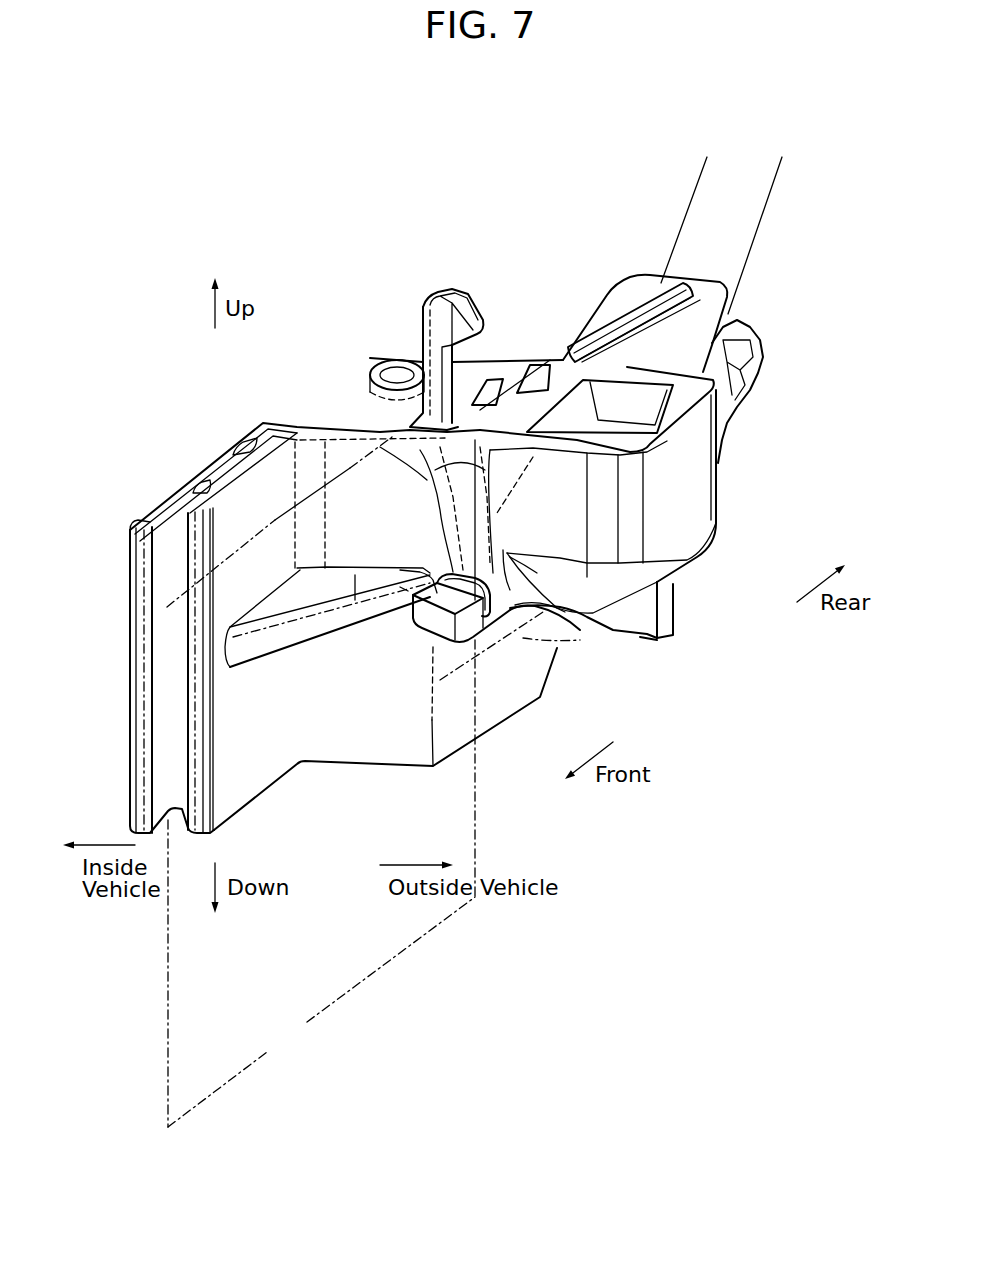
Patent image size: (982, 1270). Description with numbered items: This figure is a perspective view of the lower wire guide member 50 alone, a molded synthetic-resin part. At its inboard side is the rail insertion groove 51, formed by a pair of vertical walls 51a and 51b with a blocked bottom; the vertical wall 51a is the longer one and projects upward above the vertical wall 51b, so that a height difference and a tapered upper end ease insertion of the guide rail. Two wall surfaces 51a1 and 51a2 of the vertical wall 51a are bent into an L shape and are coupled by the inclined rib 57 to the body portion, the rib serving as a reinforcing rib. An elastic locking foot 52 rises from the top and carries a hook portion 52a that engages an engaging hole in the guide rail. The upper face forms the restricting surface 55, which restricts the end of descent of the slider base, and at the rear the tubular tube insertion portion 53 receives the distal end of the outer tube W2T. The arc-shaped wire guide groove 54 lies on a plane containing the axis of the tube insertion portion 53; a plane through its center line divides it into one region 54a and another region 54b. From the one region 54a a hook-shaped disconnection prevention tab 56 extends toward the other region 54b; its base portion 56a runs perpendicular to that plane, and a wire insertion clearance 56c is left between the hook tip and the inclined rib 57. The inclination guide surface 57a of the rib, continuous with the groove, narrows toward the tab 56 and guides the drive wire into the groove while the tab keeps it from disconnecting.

The wire guide member 50 is at (733, 598).
The rail insertion groove 51 is at (331, 576).
The vertical wall 51a is at (241, 430).
The wall surface 51a1 is at (265, 513).
The wall surface 51a2 is at (347, 475).
The vertical wall 51b is at (151, 512).
The elastic locking foot 52 is at (455, 323).
The hook portion 52a is at (480, 337).
The tubular tube insertion portion 53 is at (765, 355).
The wire guide groove 54 is at (458, 600).
The one region 54a is at (276, 1017).
The another region 54b is at (162, 1012).
The restricting surface 55 is at (653, 423).
The disconnection prevention tab 56 is at (510, 669).
The base portion 56a is at (492, 617).
The wire insertion clearance 56c is at (442, 578).
The inclined rib 57 is at (331, 699).
The inclination guide surface 57a is at (353, 620).
The outer tube W2T is at (743, 222).